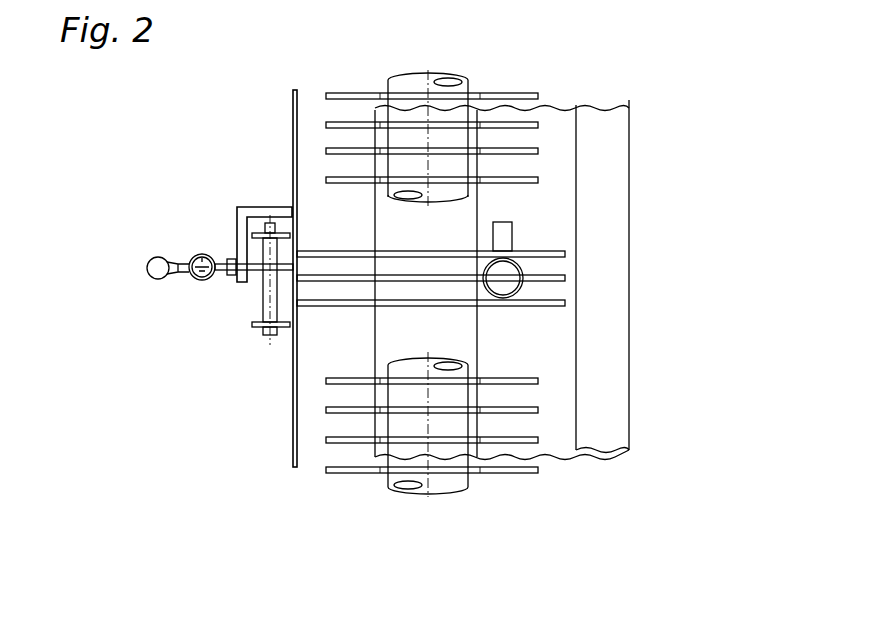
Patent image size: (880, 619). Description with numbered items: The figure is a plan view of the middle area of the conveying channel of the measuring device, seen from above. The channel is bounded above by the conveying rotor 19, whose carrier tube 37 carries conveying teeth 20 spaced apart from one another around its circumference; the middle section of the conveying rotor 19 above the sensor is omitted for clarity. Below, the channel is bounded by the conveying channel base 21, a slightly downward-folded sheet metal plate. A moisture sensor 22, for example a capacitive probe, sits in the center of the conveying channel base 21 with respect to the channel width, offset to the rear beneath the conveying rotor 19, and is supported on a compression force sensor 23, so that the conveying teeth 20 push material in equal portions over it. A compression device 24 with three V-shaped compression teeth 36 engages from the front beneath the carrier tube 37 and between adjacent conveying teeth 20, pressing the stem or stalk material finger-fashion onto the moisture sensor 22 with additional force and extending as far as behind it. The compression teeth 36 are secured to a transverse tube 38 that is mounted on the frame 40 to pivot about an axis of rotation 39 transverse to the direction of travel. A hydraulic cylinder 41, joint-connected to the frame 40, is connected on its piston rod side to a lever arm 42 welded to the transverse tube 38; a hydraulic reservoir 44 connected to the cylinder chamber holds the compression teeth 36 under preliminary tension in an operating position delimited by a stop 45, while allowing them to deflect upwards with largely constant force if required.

The conveying rotor 19 is at (530, 92).
The conveying teeth 20 is at (533, 153).
The conveying channel base 21 is at (563, 433).
The moisture sensor 22 is at (503, 289).
The compression force sensor 23 is at (503, 237).
The compression device 24 is at (450, 310).
The compression teeth 36 is at (438, 255).
The carrier tube 37 is at (463, 88).
The transverse tube 38 is at (258, 305).
The axis of rotation 39 is at (270, 340).
The frame 40 is at (293, 128).
The hydraulic cylinder 41 is at (202, 254).
The lever arm 42 is at (227, 272).
The hydraulic reservoir 44 is at (158, 268).
The stop 45 is at (263, 207).